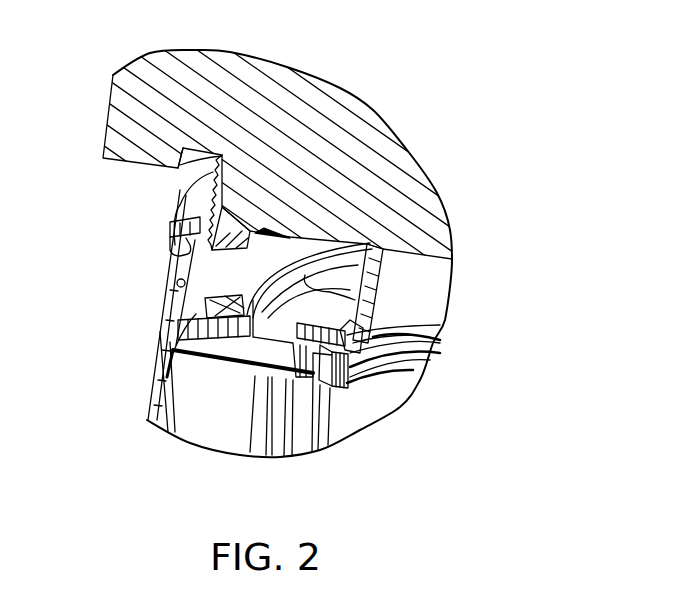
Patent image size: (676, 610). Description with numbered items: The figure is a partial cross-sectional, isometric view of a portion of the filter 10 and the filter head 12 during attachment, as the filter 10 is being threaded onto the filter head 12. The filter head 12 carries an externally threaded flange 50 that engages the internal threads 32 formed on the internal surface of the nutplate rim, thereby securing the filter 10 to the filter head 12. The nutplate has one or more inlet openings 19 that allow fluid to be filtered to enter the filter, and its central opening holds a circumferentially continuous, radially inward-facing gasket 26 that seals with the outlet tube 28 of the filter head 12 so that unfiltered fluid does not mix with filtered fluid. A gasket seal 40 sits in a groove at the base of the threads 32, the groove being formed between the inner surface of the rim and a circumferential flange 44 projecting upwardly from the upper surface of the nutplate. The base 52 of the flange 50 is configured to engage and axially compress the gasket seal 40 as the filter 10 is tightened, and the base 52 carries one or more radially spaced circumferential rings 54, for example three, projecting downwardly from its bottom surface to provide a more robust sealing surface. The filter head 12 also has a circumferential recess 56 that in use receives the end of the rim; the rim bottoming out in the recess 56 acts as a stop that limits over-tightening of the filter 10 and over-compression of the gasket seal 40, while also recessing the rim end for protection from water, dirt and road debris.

The filter 10 is at (148, 419).
The filter head 12 is at (366, 104).
The inlet openings 19 is at (372, 282).
The circumferential gasket 26 is at (342, 388).
The outlet tube 28 is at (380, 327).
The internal threads 32 is at (200, 290).
The gasket seal 40 is at (200, 314).
The circumferential flange 44 is at (240, 365).
The externally threaded flange 50 is at (240, 205).
The base of the flange 52 is at (197, 240).
The circumferential rings 54 is at (247, 246).
The circumferential recess 56 is at (200, 153).